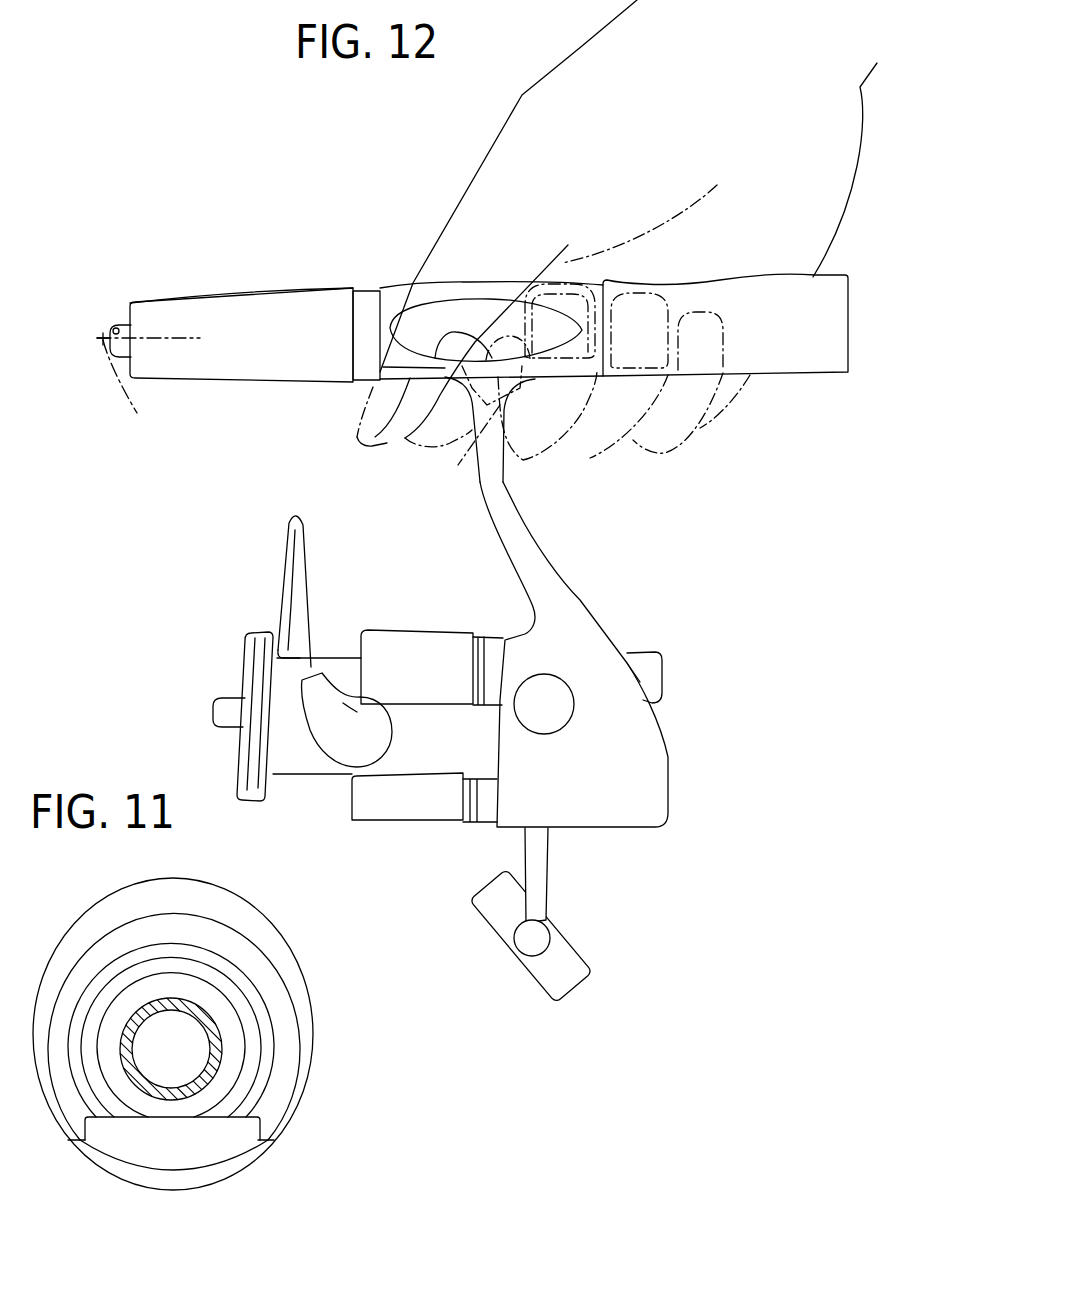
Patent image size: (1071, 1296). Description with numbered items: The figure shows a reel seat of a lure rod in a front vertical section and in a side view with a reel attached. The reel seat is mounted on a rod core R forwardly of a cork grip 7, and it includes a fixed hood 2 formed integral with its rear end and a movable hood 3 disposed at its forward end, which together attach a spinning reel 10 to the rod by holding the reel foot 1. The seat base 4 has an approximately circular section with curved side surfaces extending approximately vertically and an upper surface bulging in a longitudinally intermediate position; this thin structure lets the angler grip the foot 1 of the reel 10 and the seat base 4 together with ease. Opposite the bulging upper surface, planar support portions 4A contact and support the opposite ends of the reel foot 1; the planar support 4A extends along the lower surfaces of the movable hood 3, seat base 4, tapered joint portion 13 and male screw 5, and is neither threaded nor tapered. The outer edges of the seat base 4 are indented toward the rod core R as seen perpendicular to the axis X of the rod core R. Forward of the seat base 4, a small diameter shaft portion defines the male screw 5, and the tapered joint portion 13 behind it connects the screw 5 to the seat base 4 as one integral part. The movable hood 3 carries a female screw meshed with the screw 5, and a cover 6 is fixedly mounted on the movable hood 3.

In FIG. 12, the rod core R is at (123, 326).
In FIG. 11, the rod core R is at (213, 1070).
In FIG. 12, the axis of the rod core X is at (148, 389).
In FIG. 12, the reel foot 1 is at (485, 452).
In FIG. 12, the fixed hood 2 is at (604, 381).
In FIG. 11, the fixed hood 2 is at (203, 1180).
In FIG. 12, the movable hood 3 is at (367, 300).
In FIG. 12, the seat base 4 is at (448, 280).
In FIG. 12, the planar support portion 4A is at (468, 297).
In FIG. 11, the planar support portion 4A is at (163, 1118).
In FIG. 11, the male screw 5 is at (262, 1041).
In FIG. 12, the cover 6 is at (255, 293).
In FIG. 12, the cork grip 7 is at (803, 362).
In FIG. 12, the spinning reel 10 is at (587, 623).
In FIG. 11, the tapered joint portion 13 is at (259, 1006).